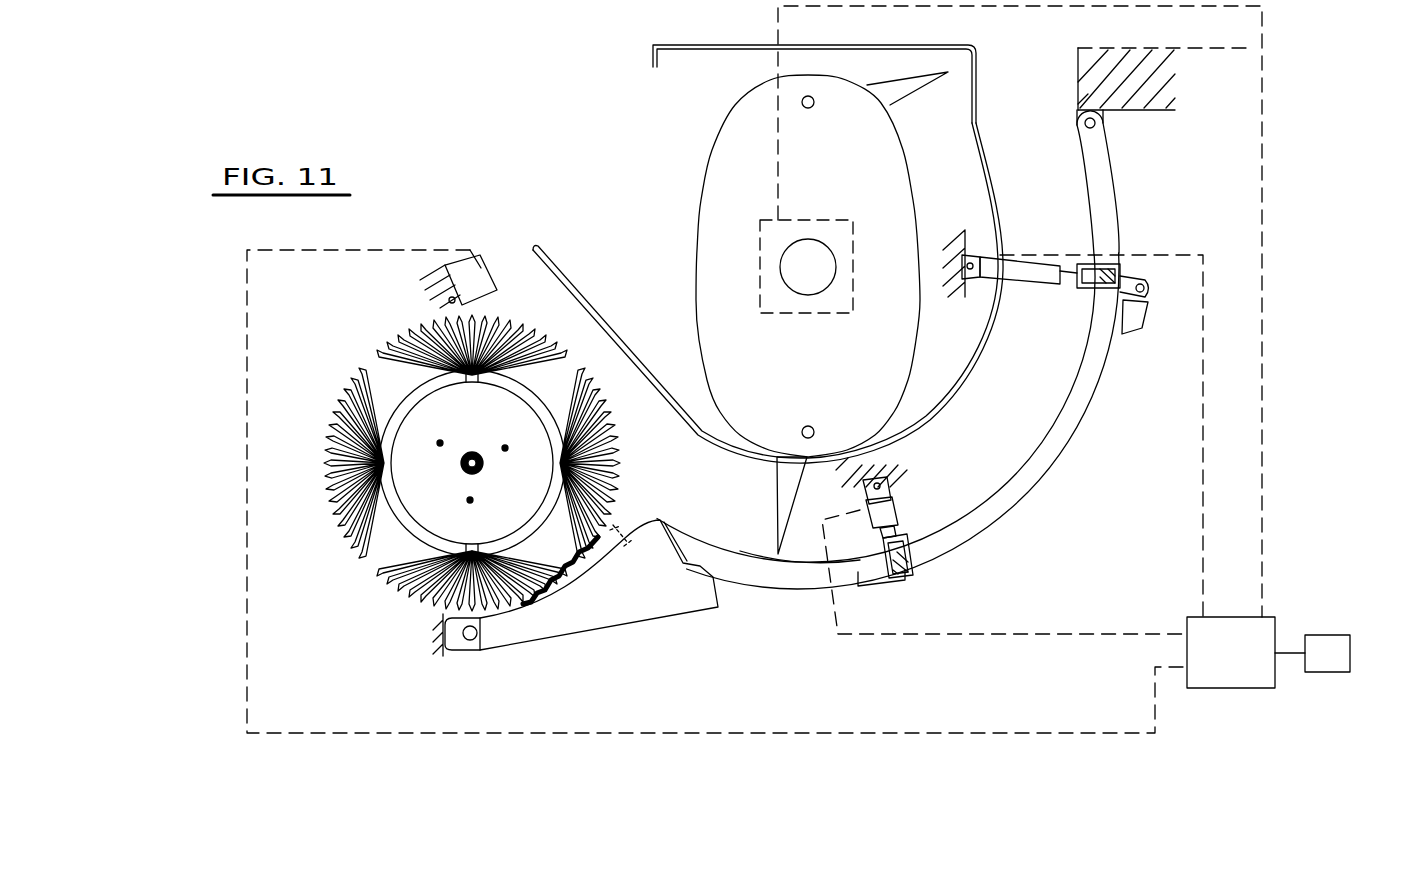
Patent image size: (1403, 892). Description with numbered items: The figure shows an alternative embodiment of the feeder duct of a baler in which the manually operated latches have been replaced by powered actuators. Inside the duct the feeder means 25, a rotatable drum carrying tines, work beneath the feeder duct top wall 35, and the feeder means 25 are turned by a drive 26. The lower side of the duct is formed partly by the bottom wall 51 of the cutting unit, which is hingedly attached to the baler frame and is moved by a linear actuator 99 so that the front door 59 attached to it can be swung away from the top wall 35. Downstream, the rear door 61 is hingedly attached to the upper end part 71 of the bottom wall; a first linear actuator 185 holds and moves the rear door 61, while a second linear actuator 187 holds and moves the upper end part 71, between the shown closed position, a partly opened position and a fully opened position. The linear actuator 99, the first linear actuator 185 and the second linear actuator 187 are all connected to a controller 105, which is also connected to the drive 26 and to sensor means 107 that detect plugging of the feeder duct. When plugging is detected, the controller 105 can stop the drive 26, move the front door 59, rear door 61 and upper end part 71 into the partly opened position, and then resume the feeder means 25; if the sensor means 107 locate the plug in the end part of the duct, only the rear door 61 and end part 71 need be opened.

The feeder means 25 is at (682, 207).
The drive 26 is at (837, 315).
The feeder duct top wall 35 is at (997, 212).
The bottom wall of the cutting unit 51 is at (590, 612).
The front door 59 is at (787, 578).
The rear door 61 is at (1032, 482).
The upper end part of the bottom wall 71 is at (1100, 182).
The linear actuator 99 is at (502, 307).
The controller 105 is at (1217, 668).
The sensor means 107 is at (1328, 648).
The first linear actuator 185 is at (913, 483).
The second linear actuator 187 is at (1033, 277).